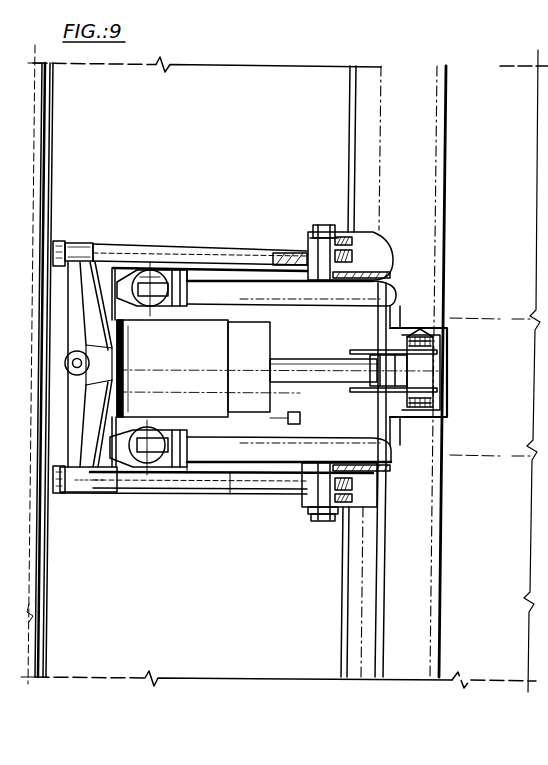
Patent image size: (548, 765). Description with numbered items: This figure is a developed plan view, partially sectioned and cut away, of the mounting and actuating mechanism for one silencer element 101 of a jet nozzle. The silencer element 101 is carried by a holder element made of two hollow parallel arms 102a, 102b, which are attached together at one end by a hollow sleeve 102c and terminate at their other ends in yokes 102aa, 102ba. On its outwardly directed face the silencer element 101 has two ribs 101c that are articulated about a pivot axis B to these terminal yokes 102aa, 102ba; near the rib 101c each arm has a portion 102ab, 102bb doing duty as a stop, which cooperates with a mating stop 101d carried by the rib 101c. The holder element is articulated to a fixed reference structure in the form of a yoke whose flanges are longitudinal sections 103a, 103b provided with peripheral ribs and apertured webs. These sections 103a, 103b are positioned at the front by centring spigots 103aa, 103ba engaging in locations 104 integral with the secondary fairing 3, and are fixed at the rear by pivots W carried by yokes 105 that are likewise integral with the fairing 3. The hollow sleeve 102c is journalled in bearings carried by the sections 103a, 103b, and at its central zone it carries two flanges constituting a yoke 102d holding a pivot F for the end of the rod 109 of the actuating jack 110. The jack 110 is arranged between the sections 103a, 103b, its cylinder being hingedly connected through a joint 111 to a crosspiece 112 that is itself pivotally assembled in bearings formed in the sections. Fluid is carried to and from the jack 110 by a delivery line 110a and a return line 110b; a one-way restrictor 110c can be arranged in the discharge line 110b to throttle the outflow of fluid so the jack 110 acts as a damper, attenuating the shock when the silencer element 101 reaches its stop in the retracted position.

The secondary fairing 3 is at (418, 76).
The silencer element 101 is at (377, 466).
The rib 101c is at (125, 262).
The mating stop 101d is at (150, 270).
The hollow arm 102a is at (268, 456).
The yoke 102aa is at (163, 469).
The stop portion 102ab is at (268, 496).
The hollow arm 102b is at (240, 258).
The yoke 102ba is at (176, 282).
The stop portion 102bb is at (183, 305).
The hollow sleeve 102c is at (368, 322).
The yoke 102d is at (375, 440).
The longitudinal section 103a is at (107, 491).
The centring spigot 103aa is at (90, 494).
The longitudinal section 103b is at (283, 252).
The centring spigot 103ba is at (66, 244).
The location 104 is at (60, 241).
The yoke 105 is at (365, 233).
The rod 109 is at (284, 360).
The actuating jack 110 is at (302, 367).
The delivery line 110a is at (118, 390).
The return line 110b is at (290, 413).
The one-way restrictor 110c is at (300, 417).
The joint 111 is at (96, 360).
The crosspiece 112 is at (108, 373).
The pivot axis B is at (165, 268).
The pivot F is at (418, 317).
The pivot W is at (318, 225).